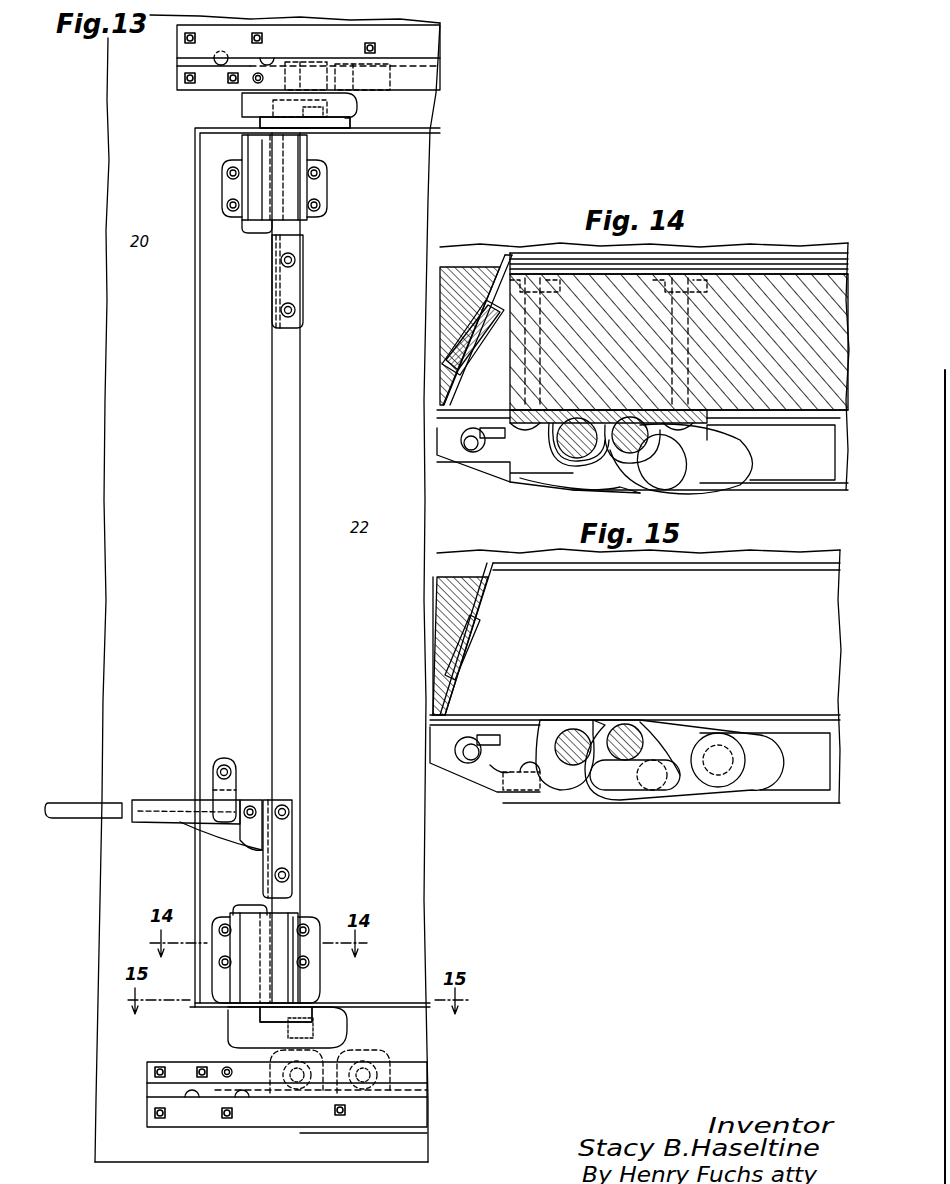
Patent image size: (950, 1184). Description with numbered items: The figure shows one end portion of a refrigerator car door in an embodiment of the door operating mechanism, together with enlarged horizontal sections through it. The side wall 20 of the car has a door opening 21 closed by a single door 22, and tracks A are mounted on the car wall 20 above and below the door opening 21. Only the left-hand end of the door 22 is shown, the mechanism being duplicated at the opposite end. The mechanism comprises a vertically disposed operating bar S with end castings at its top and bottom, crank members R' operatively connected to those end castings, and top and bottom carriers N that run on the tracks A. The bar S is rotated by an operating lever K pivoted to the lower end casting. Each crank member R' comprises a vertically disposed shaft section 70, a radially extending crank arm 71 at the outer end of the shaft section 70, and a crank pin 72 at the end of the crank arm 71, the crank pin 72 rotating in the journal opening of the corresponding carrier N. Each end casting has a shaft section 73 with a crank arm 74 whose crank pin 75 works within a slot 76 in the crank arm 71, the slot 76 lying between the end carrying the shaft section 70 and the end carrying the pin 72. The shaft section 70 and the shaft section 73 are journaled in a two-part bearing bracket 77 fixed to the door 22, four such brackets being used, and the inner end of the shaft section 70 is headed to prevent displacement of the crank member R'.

In FIG. 14, the side wall of the car 20 is at (458, 267).
In FIG. 15, the side wall of the car 20 is at (448, 577).
In FIG. 13, the door opening 21 is at (197, 172).
In FIG. 14, the door opening 21 is at (505, 267).
In FIG. 14, the door 22 is at (777, 277).
In FIG. 14, the shaft section 70 is at (562, 463).
In FIG. 15, the shaft section 70 is at (567, 768).
In FIG. 15, the crank arm 71 is at (605, 803).
In FIG. 15, the crank pin 72 is at (723, 780).
In FIG. 14, the shaft section 73 is at (637, 467).
In FIG. 15, the shaft section 73 is at (620, 762).
In FIG. 14, the crank arm 74 is at (673, 473).
In FIG. 15, the crank arm 74 is at (640, 790).
In FIG. 15, the crank pin 75 is at (668, 795).
In FIG. 13, the slot 76 is at (277, 108).
In FIG. 14, the slot 76 is at (617, 470).
In FIG. 15, the slot 76 is at (598, 787).
In FIG. 14, the bearing bracket 77 is at (478, 448).
In FIG. 13, the operating bar S is at (298, 447).
In FIG. 13, the operating lever K is at (167, 797).
In FIG. 14, the crank member R' is at (636, 472).
In FIG. 14, the carrier N is at (792, 480).
In FIG. 14, the track A is at (840, 487).